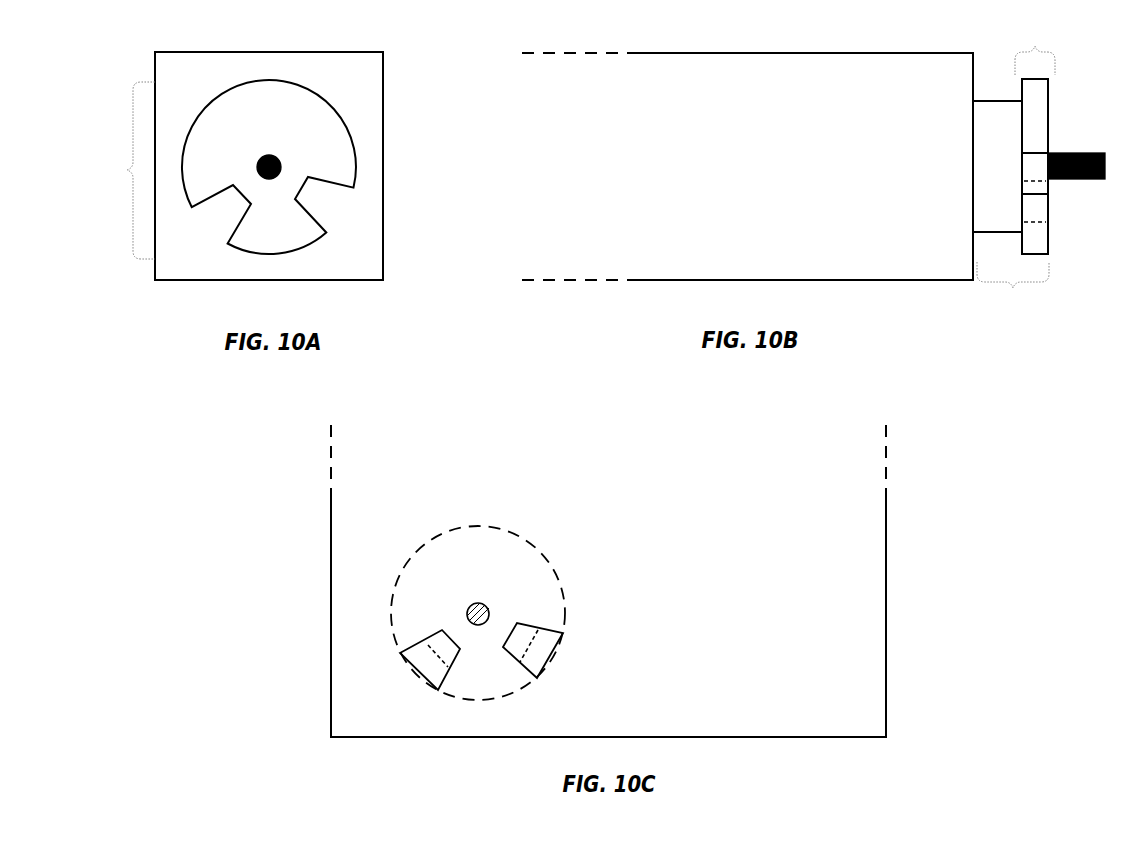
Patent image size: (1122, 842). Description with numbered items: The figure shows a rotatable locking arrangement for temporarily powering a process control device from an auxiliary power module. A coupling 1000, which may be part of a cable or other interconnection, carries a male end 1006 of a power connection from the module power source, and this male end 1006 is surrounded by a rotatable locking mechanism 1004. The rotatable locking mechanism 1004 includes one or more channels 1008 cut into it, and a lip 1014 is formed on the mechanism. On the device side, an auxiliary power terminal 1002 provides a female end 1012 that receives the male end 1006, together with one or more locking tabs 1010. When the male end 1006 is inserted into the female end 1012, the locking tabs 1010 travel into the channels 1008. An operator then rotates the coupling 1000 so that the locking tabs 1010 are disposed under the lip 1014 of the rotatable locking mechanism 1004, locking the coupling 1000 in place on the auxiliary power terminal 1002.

In FIG. 10A, the coupling 1000 is at (307, 52).
In FIG. 10B, the coupling 1000 is at (788, 53).
In FIG. 10C, the auxiliary power terminal 1002 is at (887, 572).
In FIG. 10A, the rotatable locking mechanism 1004 is at (119, 170).
In FIG. 10B, the rotatable locking mechanism 1004 is at (1011, 208).
In FIG. 10A, the male end 1006 is at (274, 158).
In FIG. 10B, the male end 1006 is at (1072, 150).
In FIG. 10A, the channel 1008 is at (327, 209).
In FIG. 10B, the channel 1008 is at (1039, 209).
In FIG. 10C, the locking tab 1010 is at (540, 643).
In FIG. 10C, the female end 1012 is at (480, 603).
In FIG. 10B, the lip 1014 is at (1035, 138).